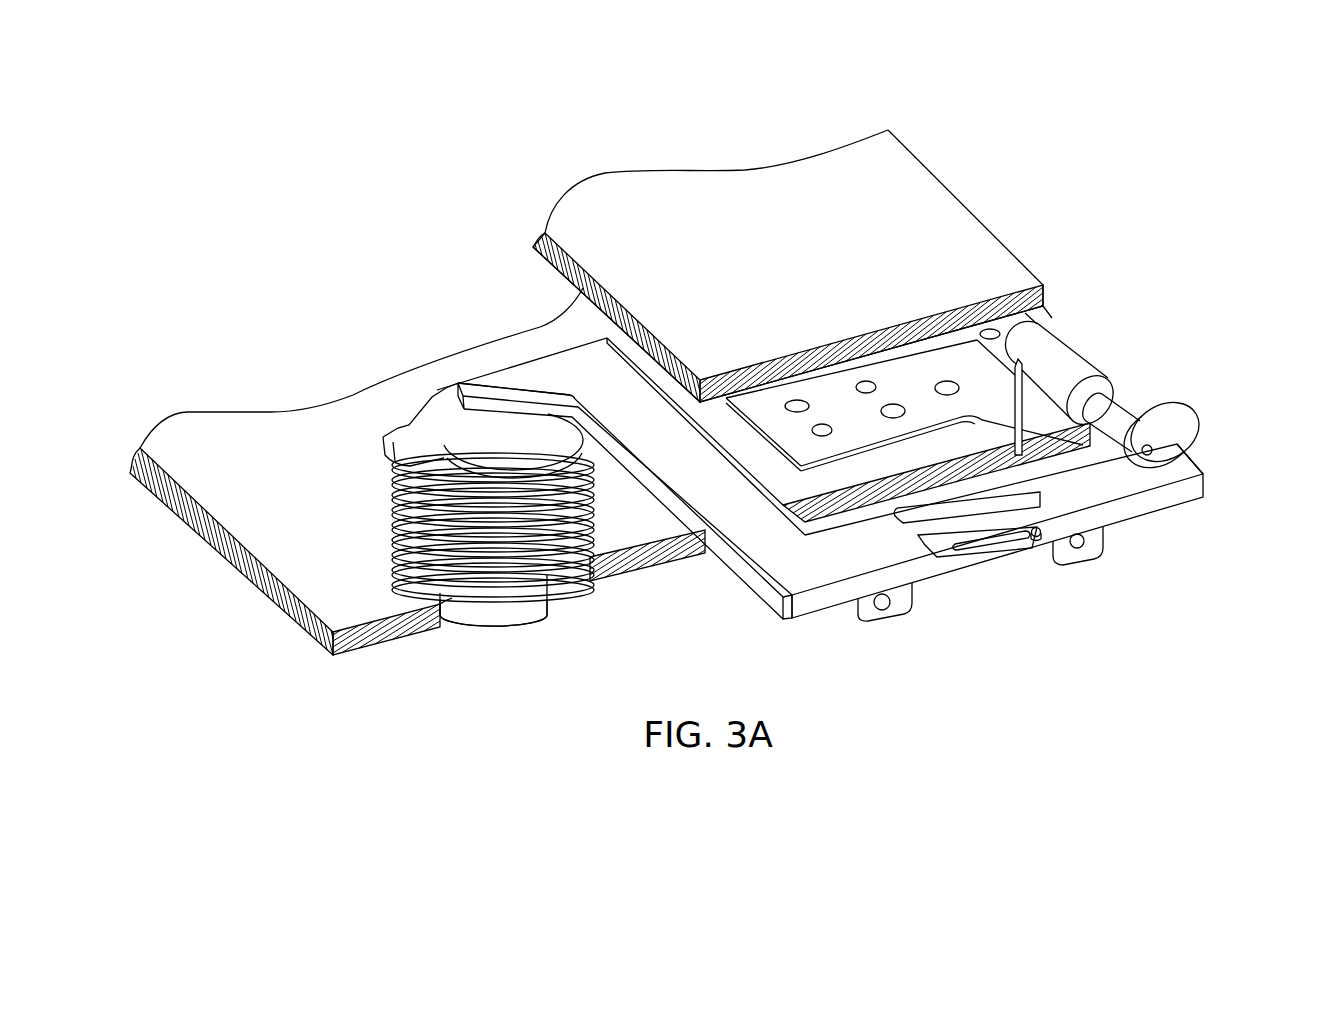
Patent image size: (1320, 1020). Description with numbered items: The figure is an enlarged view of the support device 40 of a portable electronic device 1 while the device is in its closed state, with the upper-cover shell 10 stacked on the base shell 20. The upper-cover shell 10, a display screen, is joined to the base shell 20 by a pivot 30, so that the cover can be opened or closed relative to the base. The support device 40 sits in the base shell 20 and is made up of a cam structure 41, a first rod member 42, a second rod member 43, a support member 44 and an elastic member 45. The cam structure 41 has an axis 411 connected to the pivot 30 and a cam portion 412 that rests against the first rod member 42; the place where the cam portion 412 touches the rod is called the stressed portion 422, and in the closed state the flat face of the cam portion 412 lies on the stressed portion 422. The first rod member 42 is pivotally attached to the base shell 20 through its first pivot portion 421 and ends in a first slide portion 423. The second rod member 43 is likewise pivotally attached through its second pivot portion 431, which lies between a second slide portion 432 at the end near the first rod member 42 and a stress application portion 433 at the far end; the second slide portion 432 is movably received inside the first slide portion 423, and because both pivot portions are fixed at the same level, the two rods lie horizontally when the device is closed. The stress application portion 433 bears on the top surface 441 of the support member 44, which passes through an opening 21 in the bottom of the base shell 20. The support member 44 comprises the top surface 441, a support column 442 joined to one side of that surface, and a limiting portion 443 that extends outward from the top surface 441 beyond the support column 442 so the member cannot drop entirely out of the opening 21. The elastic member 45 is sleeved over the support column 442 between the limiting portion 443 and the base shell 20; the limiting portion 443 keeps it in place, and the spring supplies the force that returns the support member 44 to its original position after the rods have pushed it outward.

The portable electronic device 1 is at (310, 163).
The upper-cover shell 10 is at (933, 193).
The base shell 20 is at (610, 492).
The opening 21 is at (450, 632).
The pivot 30 is at (1072, 355).
The support device 40 is at (375, 398).
The cam structure 41 is at (1188, 343).
The axis 411 is at (1130, 406).
The cam portion 412 is at (1181, 442).
The first rod member 42 is at (1009, 537).
The first pivot portion 421 is at (1080, 547).
The stressed portion 422 is at (1172, 475).
The first slide portion 423 is at (980, 552).
The second rod member 43 is at (753, 481).
The second pivot portion 431 is at (890, 600).
The second slide portion 432 is at (1035, 541).
The stress application portion 433 is at (502, 387).
The support member 44 is at (471, 502).
The top surface 441 is at (440, 403).
The support column 442 is at (505, 632).
The limiting portion 443 is at (385, 438).
The elastic member 45 is at (400, 511).